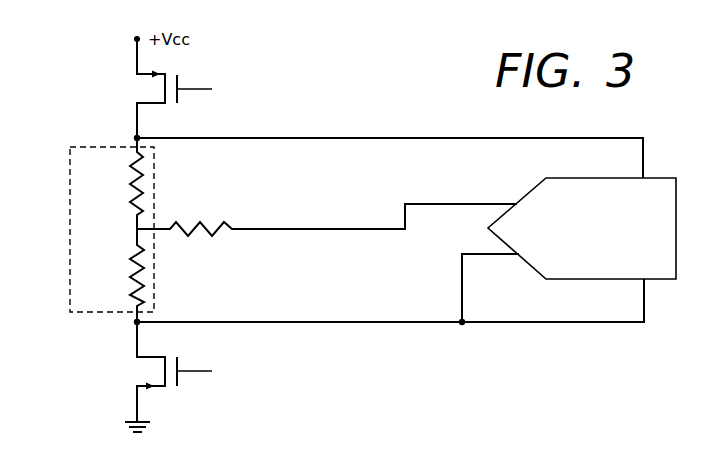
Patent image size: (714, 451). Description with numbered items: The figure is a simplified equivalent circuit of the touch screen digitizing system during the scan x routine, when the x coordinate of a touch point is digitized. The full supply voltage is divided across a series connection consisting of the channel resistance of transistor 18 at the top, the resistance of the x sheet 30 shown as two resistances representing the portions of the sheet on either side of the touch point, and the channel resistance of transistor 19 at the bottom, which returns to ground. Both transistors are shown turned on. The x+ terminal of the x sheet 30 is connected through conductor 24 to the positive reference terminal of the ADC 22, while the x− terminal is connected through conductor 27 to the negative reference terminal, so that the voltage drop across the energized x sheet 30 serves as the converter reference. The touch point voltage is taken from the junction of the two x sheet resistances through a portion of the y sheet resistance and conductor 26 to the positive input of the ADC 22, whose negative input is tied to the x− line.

The transistor 18 is at (143, 101).
The transistor 19 is at (143, 357).
The x sheet 30 is at (70, 229).
The conductor 24 is at (366, 138).
The conductor 26 is at (360, 229).
The conductor 27 is at (352, 322).
The ADC 22 is at (576, 280).